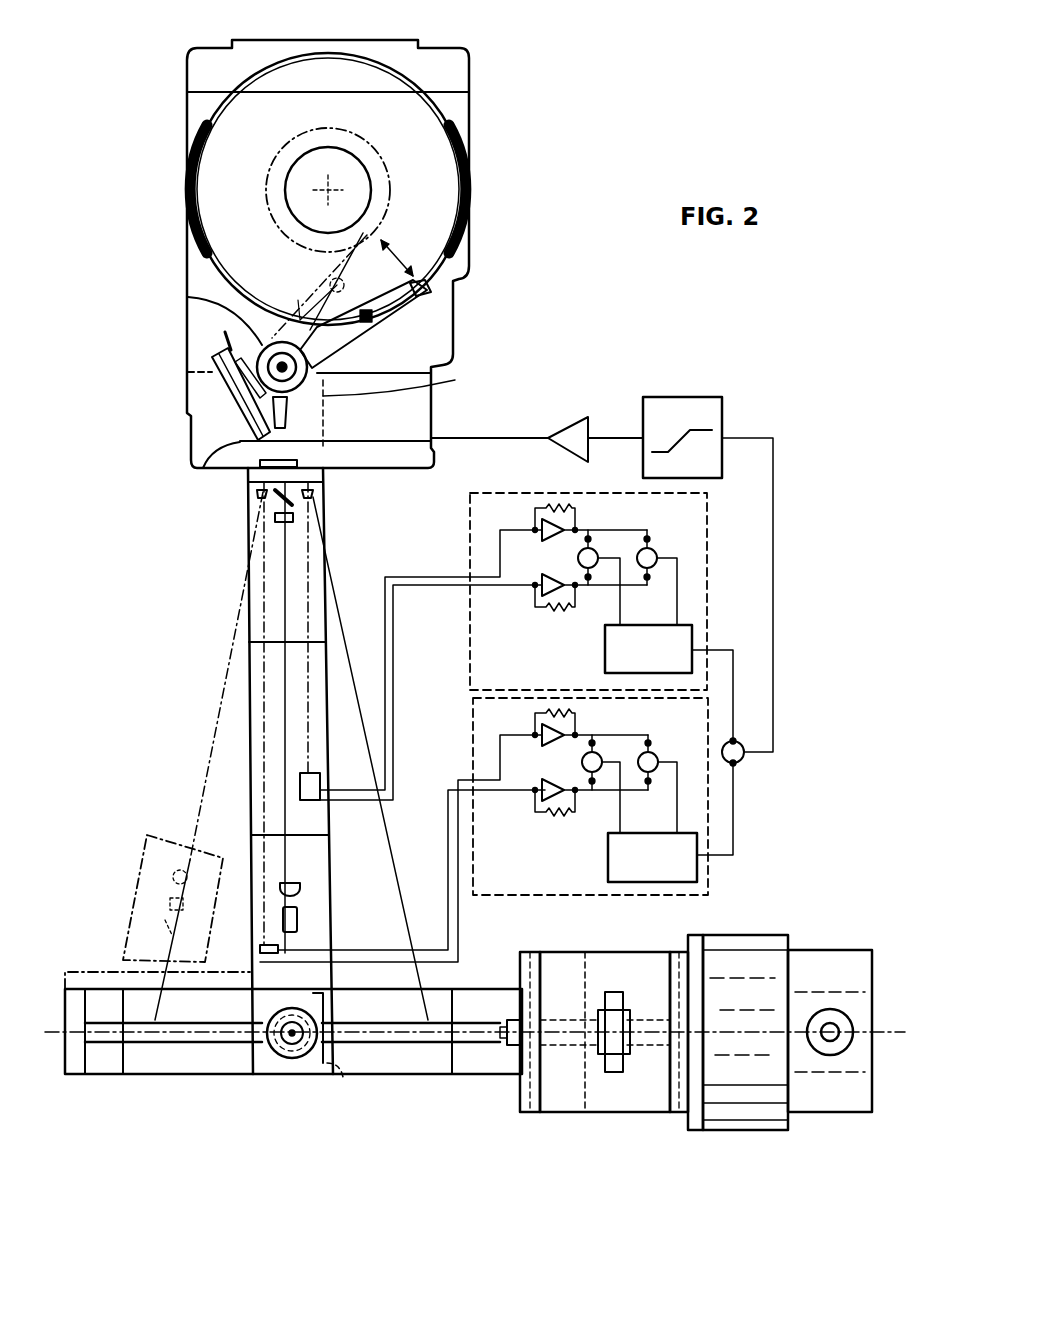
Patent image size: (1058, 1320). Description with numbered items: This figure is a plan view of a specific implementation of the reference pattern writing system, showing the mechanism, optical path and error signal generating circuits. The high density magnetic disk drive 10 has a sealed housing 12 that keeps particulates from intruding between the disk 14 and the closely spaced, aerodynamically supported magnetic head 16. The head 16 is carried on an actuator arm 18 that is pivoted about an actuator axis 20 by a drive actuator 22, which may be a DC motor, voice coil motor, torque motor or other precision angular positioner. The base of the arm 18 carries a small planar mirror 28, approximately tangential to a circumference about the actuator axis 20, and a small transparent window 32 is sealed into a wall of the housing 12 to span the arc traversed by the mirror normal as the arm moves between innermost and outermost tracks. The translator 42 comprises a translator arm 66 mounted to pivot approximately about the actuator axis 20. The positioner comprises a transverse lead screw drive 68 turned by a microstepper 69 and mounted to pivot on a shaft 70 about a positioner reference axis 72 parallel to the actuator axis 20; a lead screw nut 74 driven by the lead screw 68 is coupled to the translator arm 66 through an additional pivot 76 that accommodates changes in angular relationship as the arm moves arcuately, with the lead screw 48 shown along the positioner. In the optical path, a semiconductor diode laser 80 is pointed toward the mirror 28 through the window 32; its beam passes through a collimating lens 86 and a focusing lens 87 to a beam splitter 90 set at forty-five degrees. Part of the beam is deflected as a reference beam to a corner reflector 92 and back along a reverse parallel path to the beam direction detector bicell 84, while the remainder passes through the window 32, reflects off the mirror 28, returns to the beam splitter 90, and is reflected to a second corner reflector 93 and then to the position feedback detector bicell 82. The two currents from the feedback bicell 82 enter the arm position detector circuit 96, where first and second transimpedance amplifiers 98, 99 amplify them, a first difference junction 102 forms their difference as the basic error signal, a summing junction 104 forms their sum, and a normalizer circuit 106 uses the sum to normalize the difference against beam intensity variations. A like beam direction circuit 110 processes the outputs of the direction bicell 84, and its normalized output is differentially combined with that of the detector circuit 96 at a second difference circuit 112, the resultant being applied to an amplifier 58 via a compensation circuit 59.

The magnetic disk drive 10 is at (510, 158).
The sealed housing 12 is at (477, 232).
The disk 14 is at (470, 108).
The magnetic head 16 is at (418, 291).
The actuator arm 18 is at (355, 336).
The actuator axis 20 is at (188, 297).
The drive actuator 22 is at (192, 392).
The planar mirror 28 is at (455, 380).
The transparent window 32 is at (217, 466).
The translator 42 is at (192, 718).
The lead screw 48 is at (465, 1085).
The amplifier 58 is at (565, 423).
The compensation circuit 59 is at (680, 395).
The translator arm 66 is at (252, 765).
The lead screw drive 68 is at (153, 1075).
The microstepper 69 is at (757, 1133).
The shaft 70 is at (838, 1040).
The positioner reference axis 72 is at (834, 1027).
The lead screw nut 74 is at (345, 1078).
The additional pivot 76 is at (288, 1042).
The semiconductor diode laser 80 is at (297, 916).
The position feedback detector bicell 82 is at (320, 772).
The beam direction detector bicell 84 is at (262, 944).
The collimating lens 86 is at (300, 890).
The focusing lens 87 is at (293, 521).
The beam splitter 90 is at (277, 497).
The corner reflector 92 is at (260, 494).
The second corner reflector 93 is at (313, 494).
The arm position detector circuit 96 is at (615, 617).
The first transimpedance amplifier 98 is at (535, 527).
The second transimpedance amplifier 99 is at (553, 572).
The first difference junction 102 is at (600, 548).
The summing junction 104 is at (656, 548).
The normalizer circuit 106 is at (605, 655).
The beam direction circuit 110 is at (710, 885).
The second difference circuit 112 is at (745, 760).